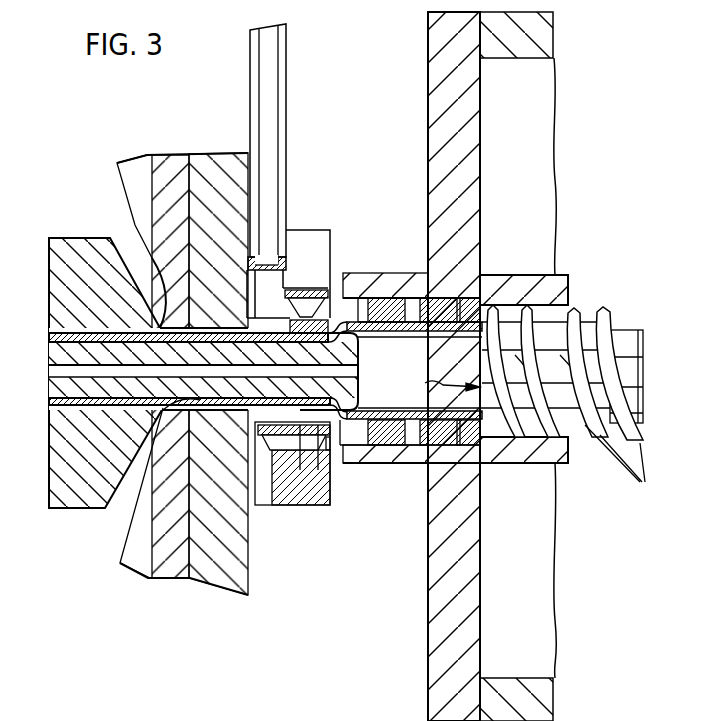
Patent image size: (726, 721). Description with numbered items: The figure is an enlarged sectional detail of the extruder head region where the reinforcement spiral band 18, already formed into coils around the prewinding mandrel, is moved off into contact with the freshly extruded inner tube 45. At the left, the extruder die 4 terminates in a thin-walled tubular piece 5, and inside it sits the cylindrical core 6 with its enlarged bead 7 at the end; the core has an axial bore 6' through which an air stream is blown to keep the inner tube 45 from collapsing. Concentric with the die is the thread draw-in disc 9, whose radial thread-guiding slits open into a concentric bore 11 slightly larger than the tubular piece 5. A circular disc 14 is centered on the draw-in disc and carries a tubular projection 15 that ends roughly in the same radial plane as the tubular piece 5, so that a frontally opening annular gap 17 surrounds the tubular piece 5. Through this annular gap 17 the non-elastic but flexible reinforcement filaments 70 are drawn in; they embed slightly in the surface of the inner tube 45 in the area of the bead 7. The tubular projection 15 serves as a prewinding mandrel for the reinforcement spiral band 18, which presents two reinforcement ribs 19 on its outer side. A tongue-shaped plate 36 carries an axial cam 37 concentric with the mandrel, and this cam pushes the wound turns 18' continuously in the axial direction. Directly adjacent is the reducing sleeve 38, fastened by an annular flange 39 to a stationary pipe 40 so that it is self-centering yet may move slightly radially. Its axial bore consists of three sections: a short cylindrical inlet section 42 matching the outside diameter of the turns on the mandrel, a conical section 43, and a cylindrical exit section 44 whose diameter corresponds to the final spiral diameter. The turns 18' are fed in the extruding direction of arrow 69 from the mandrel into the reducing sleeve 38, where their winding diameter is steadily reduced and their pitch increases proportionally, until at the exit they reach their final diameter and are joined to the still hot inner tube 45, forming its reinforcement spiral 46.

The extruder die 4 is at (80, 490).
The tubular piece 5 is at (327, 447).
The cylindrical core 6 is at (188, 370).
The axial bore 6' is at (187, 383).
The enlarged bead 7 is at (360, 338).
The thread draw-in disc 9 is at (178, 155).
The concentric bore 11 is at (148, 292).
The circular disc 14 is at (223, 158).
The tubular projection 15 is at (258, 315).
The annular gap 17 is at (150, 445).
The reinforcement spiral band 18 is at (295, 144).
The turns 18' is at (343, 488).
The reinforcement ribs 19 is at (258, 256).
The tongue-shaped plate 36 is at (323, 232).
The axial cam 37 is at (312, 292).
The reducing sleeve 38 is at (518, 290).
The annular flange 39 is at (463, 603).
The stationary pipe 40 is at (530, 706).
The inlet-side bore section 42 is at (364, 296).
The conical bore section 43 is at (513, 440).
The exit-side bore section 44 is at (575, 445).
The inner tube 45 is at (58, 334).
The reinforcement spiral 46 is at (584, 332).
The arrow indicating extruding direction 69 is at (437, 388).
The reinforcement filaments 70 is at (621, 462).